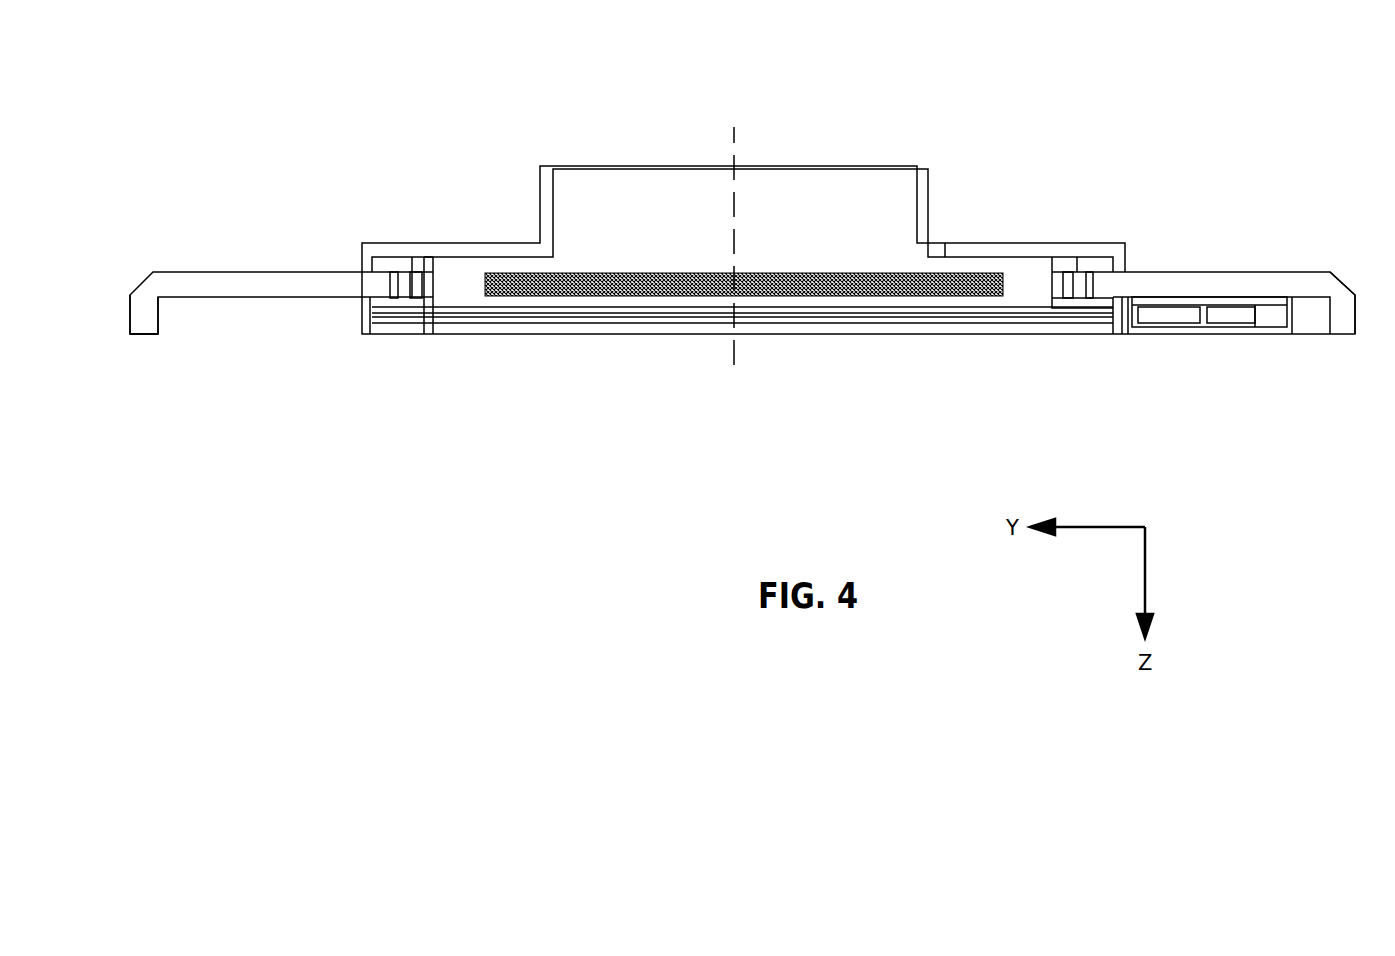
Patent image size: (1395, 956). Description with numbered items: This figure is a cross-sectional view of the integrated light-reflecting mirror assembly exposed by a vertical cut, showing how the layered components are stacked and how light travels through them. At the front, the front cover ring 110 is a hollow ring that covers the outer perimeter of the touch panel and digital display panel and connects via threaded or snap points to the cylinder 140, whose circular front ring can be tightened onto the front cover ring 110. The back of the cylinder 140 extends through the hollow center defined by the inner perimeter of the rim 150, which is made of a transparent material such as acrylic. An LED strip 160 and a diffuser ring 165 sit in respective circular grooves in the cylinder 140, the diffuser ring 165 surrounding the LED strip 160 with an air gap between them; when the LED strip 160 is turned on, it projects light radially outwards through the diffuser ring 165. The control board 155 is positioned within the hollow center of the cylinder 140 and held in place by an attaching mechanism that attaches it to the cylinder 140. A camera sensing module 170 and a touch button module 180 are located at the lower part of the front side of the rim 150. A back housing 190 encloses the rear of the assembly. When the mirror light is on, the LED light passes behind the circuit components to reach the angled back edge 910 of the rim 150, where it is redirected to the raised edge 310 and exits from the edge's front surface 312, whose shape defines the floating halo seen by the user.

The front cover ring 110 is at (370, 328).
The cylinder 140 is at (427, 302).
The rim 150 is at (282, 272).
The control board 155 is at (833, 290).
The LED strip 160 is at (1068, 278).
The diffuser ring 165 is at (1090, 280).
The camera sensing module 170 is at (1163, 320).
The touch button module 180 is at (1243, 320).
The back housing 190 is at (972, 244).
The raised edge 310 is at (147, 315).
The edge's front surface 312 is at (143, 337).
The angled back edge 910 is at (1343, 283).